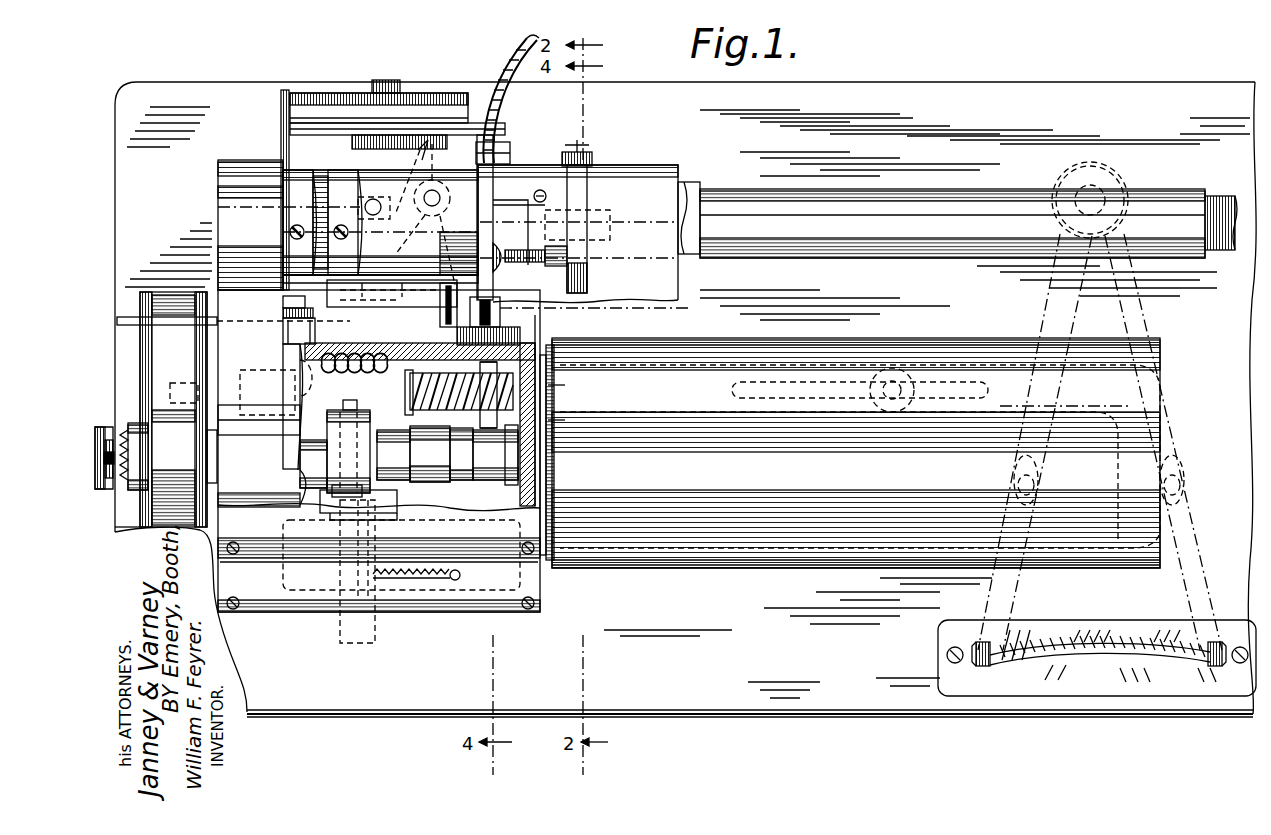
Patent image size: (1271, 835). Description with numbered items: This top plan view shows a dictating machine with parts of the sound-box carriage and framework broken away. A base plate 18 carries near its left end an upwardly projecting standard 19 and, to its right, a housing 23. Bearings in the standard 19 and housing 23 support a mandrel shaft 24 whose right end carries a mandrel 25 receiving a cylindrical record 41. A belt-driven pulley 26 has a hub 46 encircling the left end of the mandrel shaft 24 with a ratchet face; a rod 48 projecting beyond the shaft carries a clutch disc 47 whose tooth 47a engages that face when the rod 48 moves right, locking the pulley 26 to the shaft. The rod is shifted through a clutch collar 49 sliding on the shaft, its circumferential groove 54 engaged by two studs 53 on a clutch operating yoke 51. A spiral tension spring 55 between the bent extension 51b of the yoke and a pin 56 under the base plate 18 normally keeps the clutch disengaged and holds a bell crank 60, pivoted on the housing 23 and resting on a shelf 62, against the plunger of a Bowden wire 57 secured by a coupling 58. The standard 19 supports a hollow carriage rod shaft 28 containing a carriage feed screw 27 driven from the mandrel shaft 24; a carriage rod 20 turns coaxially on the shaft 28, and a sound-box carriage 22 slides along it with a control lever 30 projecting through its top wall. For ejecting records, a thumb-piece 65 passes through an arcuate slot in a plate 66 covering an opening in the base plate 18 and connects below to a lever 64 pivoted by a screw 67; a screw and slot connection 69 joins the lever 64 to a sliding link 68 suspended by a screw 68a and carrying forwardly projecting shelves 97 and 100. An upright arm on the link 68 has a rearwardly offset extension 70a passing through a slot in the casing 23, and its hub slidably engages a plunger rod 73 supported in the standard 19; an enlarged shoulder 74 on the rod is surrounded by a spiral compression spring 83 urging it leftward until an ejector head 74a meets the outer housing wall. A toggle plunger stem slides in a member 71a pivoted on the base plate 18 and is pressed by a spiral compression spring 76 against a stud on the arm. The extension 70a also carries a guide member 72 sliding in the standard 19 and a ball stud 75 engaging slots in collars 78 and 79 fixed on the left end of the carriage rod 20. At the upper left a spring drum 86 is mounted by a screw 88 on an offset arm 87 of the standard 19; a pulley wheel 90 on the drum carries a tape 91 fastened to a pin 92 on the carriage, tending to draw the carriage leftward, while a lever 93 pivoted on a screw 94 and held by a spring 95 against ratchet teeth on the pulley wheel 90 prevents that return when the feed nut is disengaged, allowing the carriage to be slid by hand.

The base plate 18 is at (660, 648).
The standard 19 is at (289, 225).
The carriage rod 20 is at (320, 178).
The sound-box carriage 22 is at (584, 236).
The housing 23 is at (379, 451).
The mandrel shaft 24 is at (495, 455).
The mandrel 25 is at (560, 472).
The pulley 26 is at (178, 409).
The carriage feed screw 27 is at (1220, 196).
The carriage rod shaft 28 is at (952, 223).
The control lever 30 is at (588, 268).
The cylindrical record 41 is at (856, 453).
The hub 46 is at (138, 448).
The clutch disc 47 is at (108, 466).
The tooth or pawl 47a is at (100, 428).
The rod 48 is at (120, 530).
The clutch collar 49 is at (394, 455).
The clutch operating yoke 51 is at (392, 506).
The extension 51b is at (358, 635).
The studs 53 is at (358, 414).
The circumferential groove 54 is at (300, 450).
The spiral tension spring 55 is at (398, 582).
The pin 56 is at (456, 582).
The Bowden wire 57 is at (520, 52).
The coupling 58 is at (495, 305).
The bell crank 60 is at (548, 390).
The shelf 62 is at (548, 424).
The lever 64 is at (1010, 600).
The thumb-piece 65 is at (1097, 665).
The plate 66 is at (1108, 630).
The screw 67 is at (1100, 192).
The sliding link 68 is at (700, 398).
The screw 68a is at (893, 368).
The screw and slot connection 69 is at (1038, 486).
The extension 70a is at (312, 345).
The member 71a is at (365, 310).
The guide member 72 is at (125, 318).
The plunger rod 73 is at (300, 418).
The enlarged shoulder 74 is at (462, 480).
The ejector head 74a is at (538, 346).
The ball stud 75 is at (283, 302).
The spiral compression spring 76 is at (300, 372).
The collar 78 is at (345, 222).
The collar 79 is at (300, 222).
The spiral compression spring 83 is at (412, 380).
The spring drum 86 is at (379, 108).
The offset arm 87 is at (406, 210).
The screw 88 is at (386, 80).
The pulley wheel 90 is at (289, 128).
The tape 91 is at (468, 124).
The pin 92 is at (508, 158).
The lever 93 is at (447, 318).
The screw 94 is at (478, 195).
The spring 95 is at (415, 152).
The extension or shelf 97 is at (428, 412).
The extension or shelf 100 is at (480, 426).